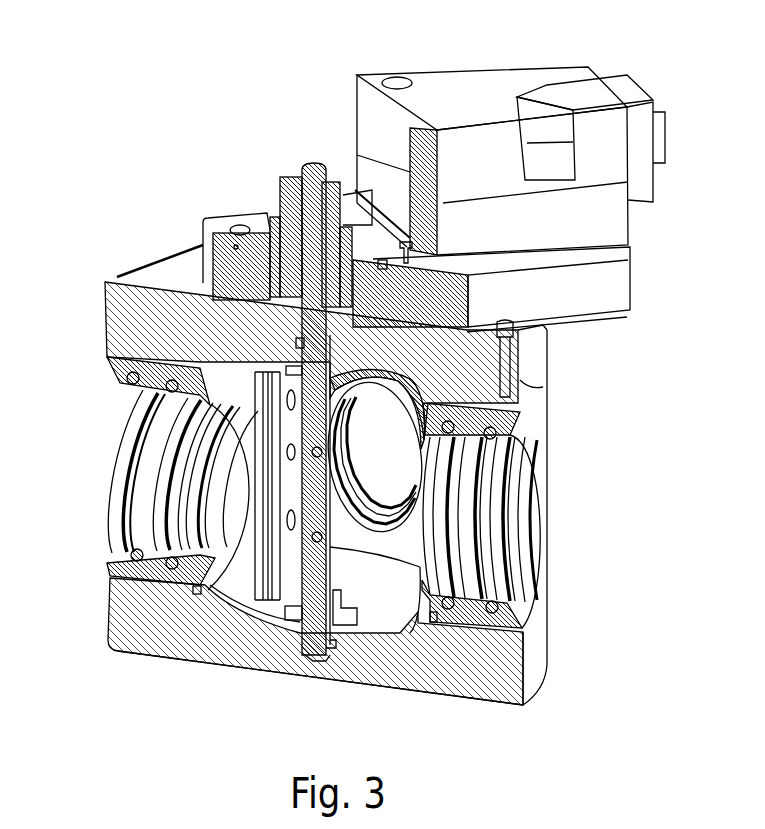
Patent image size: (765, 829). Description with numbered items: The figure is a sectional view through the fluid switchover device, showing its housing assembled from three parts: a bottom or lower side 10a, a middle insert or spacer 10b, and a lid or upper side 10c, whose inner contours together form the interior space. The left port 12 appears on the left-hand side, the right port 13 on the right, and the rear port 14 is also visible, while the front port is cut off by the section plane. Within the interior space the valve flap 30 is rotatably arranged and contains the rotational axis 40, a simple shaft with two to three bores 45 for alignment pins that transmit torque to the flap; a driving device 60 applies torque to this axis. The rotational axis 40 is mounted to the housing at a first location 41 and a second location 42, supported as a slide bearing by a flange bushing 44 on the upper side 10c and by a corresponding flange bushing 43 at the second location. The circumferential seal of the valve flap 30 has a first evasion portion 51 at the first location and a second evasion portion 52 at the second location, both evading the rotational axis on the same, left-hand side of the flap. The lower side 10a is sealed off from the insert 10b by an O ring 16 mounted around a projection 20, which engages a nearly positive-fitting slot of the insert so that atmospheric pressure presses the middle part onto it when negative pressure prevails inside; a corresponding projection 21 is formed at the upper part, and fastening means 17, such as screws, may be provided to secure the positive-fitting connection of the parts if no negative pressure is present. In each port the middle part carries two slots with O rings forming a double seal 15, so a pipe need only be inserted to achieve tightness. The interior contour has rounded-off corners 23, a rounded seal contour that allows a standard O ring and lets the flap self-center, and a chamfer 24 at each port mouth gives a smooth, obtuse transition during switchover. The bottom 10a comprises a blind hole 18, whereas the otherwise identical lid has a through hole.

The driving device 60 is at (478, 100).
The rotational axis 40 is at (312, 160).
The flange bushing 44 is at (218, 255).
The first location 41 is at (300, 312).
The fastening bolt 17 is at (300, 342).
The projection 21 is at (197, 363).
The first evasion portion 51 is at (294, 372).
The left port 12 is at (146, 458).
The chamfer 24 is at (248, 472).
The valve flap 30 is at (268, 483).
The bores 45 is at (312, 454).
The rear port 14 is at (401, 463).
The upper side 10c is at (545, 353).
The insert 10b is at (545, 413).
The lower side 10a is at (545, 650).
The right port 13 is at (376, 580).
The double seal 15 is at (490, 500).
The O ring 16 is at (197, 592).
The rounded-off corners 23 is at (240, 612).
The second evasion portion 52 is at (300, 612).
The flange bushing 43 is at (305, 640).
The blind hole 18 is at (318, 660).
The second location 42 is at (332, 642).
The projection 20 is at (437, 622).